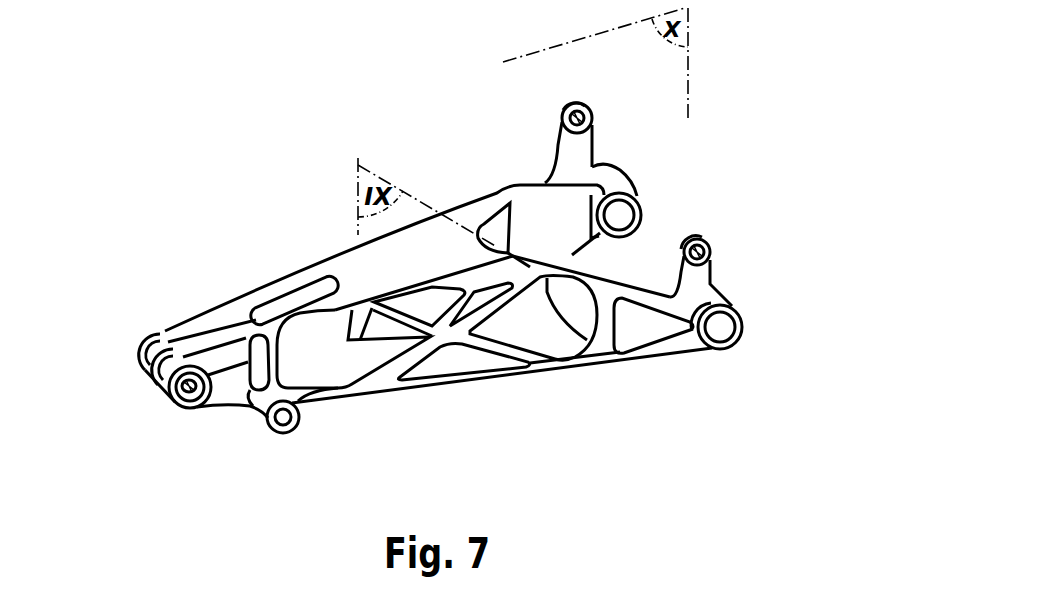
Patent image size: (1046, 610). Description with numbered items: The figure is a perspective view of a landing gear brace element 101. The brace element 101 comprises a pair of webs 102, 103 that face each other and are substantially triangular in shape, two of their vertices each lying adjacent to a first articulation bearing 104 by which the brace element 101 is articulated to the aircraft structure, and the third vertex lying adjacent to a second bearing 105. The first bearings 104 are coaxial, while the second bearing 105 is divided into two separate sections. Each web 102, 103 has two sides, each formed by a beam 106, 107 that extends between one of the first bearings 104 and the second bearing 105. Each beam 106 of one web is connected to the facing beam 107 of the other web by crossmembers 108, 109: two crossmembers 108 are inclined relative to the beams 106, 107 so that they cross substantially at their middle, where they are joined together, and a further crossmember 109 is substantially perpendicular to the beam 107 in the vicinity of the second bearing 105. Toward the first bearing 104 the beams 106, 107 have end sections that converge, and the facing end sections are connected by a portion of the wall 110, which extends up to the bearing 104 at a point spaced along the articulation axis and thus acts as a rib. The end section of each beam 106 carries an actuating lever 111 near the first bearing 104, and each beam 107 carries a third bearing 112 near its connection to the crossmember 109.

The brace element 101 is at (186, 261).
The web 102 is at (370, 262).
The web 103 is at (421, 398).
The first articulation bearing 104 is at (638, 200).
The second bearing 105 is at (172, 403).
The beam 106 is at (282, 281).
The beam 107 is at (350, 393).
The crossmember 108 is at (413, 355).
The crossmember 109 is at (242, 318).
The wall 110 is at (638, 342).
The actuating lever 111 is at (582, 112).
The third bearing 112 is at (268, 432).